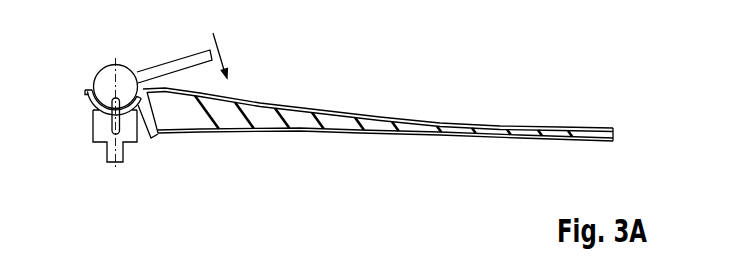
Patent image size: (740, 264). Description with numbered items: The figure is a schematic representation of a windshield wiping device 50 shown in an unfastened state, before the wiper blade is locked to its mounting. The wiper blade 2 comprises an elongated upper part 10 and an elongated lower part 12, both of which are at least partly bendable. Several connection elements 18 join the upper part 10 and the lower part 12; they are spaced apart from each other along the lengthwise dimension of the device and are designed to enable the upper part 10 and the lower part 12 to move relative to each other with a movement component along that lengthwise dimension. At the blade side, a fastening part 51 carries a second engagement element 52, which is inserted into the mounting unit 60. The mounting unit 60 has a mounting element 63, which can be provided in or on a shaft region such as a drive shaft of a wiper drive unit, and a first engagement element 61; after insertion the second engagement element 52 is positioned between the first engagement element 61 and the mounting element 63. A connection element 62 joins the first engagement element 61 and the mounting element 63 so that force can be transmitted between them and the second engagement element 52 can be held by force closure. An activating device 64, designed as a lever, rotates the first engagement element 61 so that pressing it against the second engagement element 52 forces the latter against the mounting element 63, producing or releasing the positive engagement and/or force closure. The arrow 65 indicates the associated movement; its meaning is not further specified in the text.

The wiper blade 2 is at (326, 77).
The upper part 10 is at (413, 123).
The lower part 12 is at (405, 137).
The connection elements 18 is at (360, 118).
The windshield wiping device 50 is at (98, 29).
The fastening part 51 is at (163, 142).
The second engagement element 52 is at (88, 93).
The mounting unit 60 is at (143, 58).
The first engagement element 61 is at (103, 75).
The connection element 62 is at (112, 127).
The mounting element 63 is at (135, 151).
The activating device 64 is at (187, 56).
The direction of movement 65 is at (221, 46).